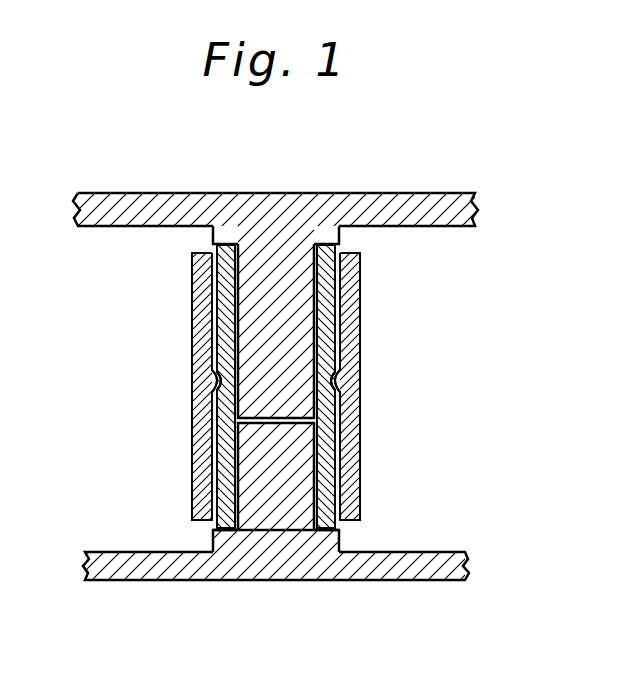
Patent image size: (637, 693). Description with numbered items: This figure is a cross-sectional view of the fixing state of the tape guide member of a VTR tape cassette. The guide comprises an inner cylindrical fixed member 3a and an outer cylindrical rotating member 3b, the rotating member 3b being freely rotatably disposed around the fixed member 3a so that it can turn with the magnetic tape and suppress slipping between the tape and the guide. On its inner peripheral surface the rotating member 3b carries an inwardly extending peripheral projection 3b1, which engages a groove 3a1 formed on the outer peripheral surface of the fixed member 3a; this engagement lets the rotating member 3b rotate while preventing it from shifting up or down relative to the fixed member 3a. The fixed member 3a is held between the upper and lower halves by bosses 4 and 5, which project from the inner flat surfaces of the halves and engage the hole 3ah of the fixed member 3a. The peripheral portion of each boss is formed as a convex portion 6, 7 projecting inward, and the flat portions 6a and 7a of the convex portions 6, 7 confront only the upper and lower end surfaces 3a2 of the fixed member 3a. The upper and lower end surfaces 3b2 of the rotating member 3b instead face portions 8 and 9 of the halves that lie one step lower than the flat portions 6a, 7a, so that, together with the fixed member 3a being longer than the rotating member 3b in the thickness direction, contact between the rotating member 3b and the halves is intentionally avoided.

The inner cylindrical fixed member 3a is at (224, 322).
The groove 3a1 is at (217, 393).
The upper and lower end surfaces of the fixed member 3a2 is at (221, 302).
The hole of the fixed member 3ah is at (313, 243).
The outer cylindrical rotating member 3b is at (196, 355).
The projection 3b1 is at (210, 382).
The upper and lower end surfaces of the rotating member 3b2 is at (207, 251).
The boss 4 is at (279, 277).
The boss 5 is at (274, 484).
The convex portion 6 is at (214, 238).
The flat portion of convex portion 6a is at (222, 242).
The convex portion 7 is at (241, 543).
The flat portion of convex portion 7a is at (214, 542).
The concave portion 8 is at (199, 226).
The concave portion 9 is at (199, 552).